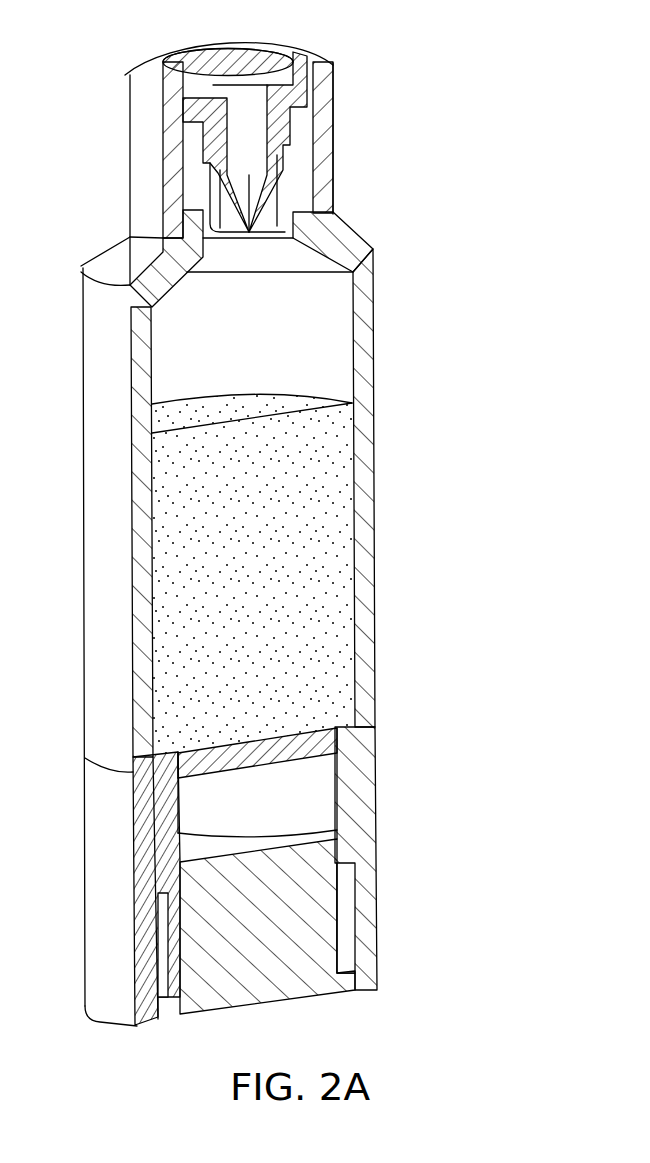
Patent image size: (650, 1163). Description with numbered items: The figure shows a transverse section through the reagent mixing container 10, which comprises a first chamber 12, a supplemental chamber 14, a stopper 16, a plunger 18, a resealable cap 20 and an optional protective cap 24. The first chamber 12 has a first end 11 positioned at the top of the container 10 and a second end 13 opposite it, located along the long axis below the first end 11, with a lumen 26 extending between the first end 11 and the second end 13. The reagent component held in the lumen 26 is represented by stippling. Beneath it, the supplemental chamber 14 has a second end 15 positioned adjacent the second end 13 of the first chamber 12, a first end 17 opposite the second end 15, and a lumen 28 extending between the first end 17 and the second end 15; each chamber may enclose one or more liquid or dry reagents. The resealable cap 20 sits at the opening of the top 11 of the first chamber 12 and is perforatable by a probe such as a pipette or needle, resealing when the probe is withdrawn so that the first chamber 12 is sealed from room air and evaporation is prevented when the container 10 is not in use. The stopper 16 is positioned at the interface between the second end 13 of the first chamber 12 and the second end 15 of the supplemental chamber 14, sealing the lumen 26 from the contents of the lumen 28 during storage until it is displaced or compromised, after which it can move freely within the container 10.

The reagent mixing container 10 is at (469, 97).
The first end 11 is at (177, 237).
The first chamber 12 is at (391, 205).
The second end 13 is at (176, 755).
The supplemental chamber 14 is at (393, 738).
The second end 15 is at (137, 823).
The stopper 16 is at (177, 777).
The first end 17 is at (137, 873).
The plunger 18 is at (195, 933).
The resealable cap 20 is at (185, 109).
The protective cap 24 is at (227, 43).
The lumen 26 is at (265, 516).
The lumen 28 is at (269, 822).